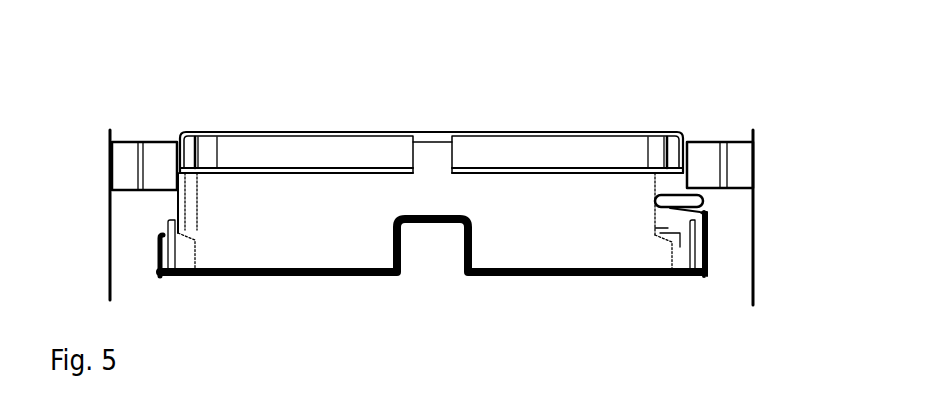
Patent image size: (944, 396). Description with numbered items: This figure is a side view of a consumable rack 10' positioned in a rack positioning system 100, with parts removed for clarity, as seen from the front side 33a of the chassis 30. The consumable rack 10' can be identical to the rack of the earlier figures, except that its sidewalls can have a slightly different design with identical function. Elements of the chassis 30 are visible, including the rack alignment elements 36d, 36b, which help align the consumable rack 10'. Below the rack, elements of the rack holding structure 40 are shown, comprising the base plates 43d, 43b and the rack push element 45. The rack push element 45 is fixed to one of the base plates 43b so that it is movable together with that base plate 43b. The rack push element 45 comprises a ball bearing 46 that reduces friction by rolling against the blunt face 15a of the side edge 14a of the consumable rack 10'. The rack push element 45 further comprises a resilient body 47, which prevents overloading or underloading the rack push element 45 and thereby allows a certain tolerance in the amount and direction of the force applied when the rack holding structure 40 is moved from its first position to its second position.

The rack positioning system 100 is at (93, 97).
The chassis 30 is at (125, 175).
The consumable rack 10' is at (430, 159).
The rack alignment element 36d is at (168, 140).
The rack alignment element 36b is at (692, 140).
The front side 33a is at (488, 312).
The base plate 43d is at (180, 278).
The base plate 43b is at (685, 267).
The side edge 14a is at (680, 250).
The blunt face 15a is at (662, 222).
The ball bearing 46 is at (715, 201).
The rack push element 45 is at (720, 212).
The resilient body 47 is at (712, 218).
The rack holding structure 40 is at (707, 250).